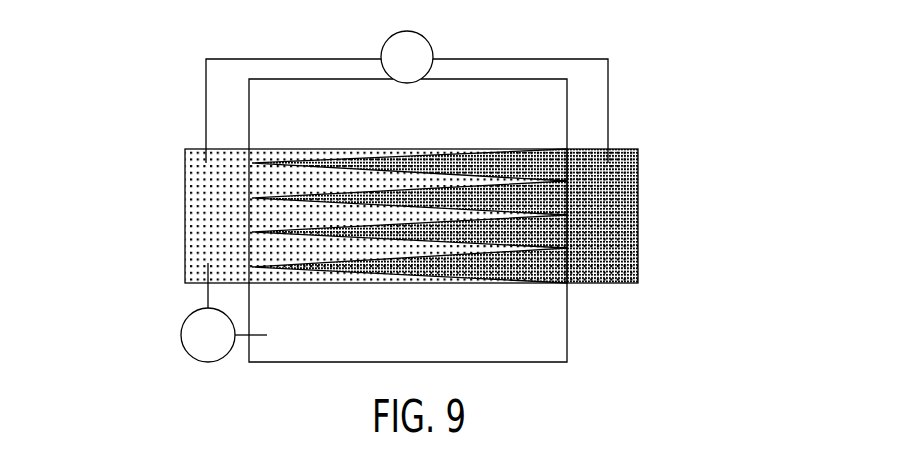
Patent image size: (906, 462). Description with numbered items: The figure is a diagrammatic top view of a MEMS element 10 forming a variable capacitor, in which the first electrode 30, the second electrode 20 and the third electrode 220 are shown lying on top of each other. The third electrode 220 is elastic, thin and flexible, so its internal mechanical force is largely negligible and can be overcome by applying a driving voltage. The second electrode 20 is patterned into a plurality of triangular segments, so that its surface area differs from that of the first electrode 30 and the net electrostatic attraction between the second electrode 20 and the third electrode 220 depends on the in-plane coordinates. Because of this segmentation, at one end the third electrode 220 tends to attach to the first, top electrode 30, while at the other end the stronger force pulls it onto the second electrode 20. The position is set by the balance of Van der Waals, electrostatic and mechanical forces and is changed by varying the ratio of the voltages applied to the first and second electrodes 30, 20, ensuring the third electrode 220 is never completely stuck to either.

The sensor system 10 is at (211, 384).
The second electrode 20 is at (612, 268).
The first electrode 30 is at (535, 347).
The third electrode 220 is at (194, 256).